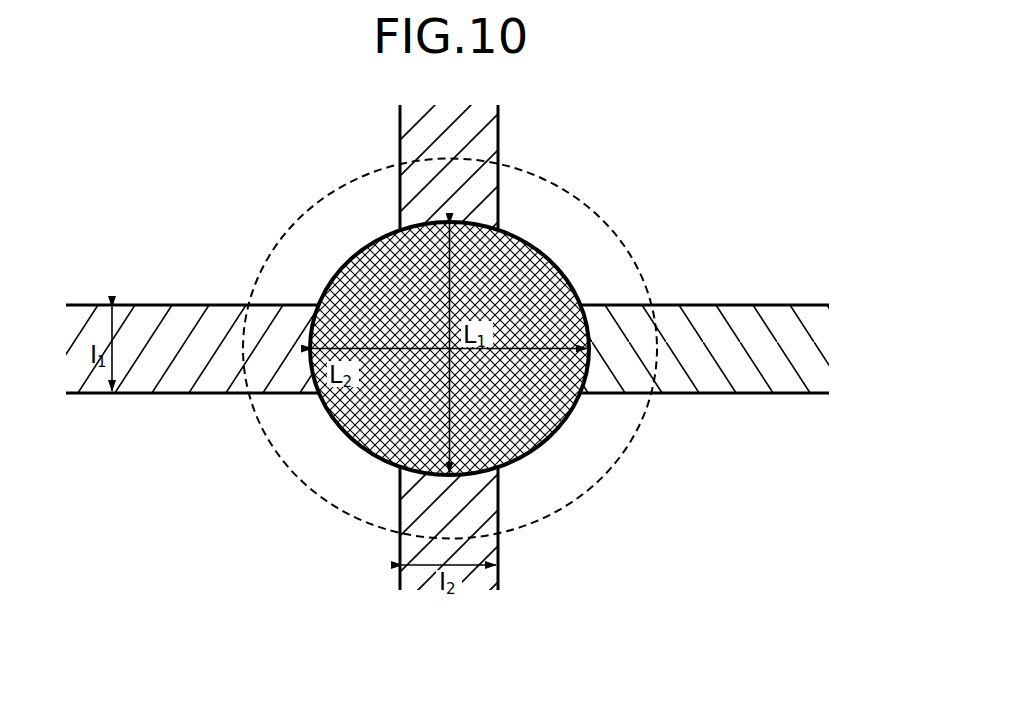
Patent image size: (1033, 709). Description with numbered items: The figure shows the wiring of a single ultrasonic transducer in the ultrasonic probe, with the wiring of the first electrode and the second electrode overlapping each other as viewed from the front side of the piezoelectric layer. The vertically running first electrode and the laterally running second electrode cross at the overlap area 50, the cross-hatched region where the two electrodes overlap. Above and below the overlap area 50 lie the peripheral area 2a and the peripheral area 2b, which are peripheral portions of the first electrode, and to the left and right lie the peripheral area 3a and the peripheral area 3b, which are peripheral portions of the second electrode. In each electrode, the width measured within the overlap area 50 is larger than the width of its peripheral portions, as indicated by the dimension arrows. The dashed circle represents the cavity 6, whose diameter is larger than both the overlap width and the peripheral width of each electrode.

The peripheral area 2a is at (478, 135).
The peripheral area 2b is at (488, 545).
The peripheral area 3a is at (172, 325).
The peripheral area 3b is at (737, 313).
The cavity 6 is at (323, 198).
The overlap area 50 is at (548, 287).